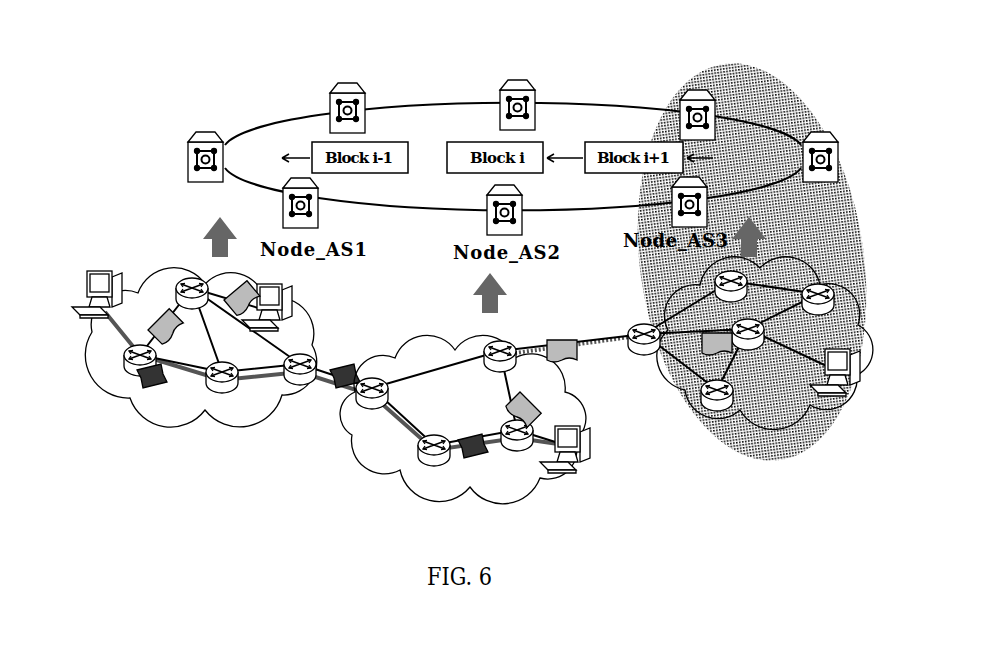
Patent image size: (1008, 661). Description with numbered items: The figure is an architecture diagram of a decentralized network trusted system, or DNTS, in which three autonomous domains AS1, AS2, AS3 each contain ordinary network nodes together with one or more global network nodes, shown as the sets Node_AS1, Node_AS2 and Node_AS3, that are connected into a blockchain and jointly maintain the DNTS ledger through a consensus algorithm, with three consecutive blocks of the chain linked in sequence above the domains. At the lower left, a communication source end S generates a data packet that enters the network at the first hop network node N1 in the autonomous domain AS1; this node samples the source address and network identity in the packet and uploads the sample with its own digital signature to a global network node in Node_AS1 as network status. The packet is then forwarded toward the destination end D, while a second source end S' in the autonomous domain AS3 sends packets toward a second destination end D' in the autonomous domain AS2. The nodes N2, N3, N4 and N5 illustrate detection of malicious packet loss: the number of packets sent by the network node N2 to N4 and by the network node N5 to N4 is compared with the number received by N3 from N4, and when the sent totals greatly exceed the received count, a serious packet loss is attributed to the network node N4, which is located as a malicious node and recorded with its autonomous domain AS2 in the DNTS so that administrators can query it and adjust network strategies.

The source end S is at (96, 304).
The destination end D is at (282, 307).
The second source end S' is at (841, 382).
The second destination end D' is at (565, 465).
The first hop network node N1 is at (124, 360).
The network node N2 is at (371, 409).
The network node N3 is at (644, 355).
The network node N4 is at (511, 345).
The network node N5 is at (517, 449).
The autonomous domain AS1 is at (200, 347).
The autonomous domain AS2 is at (463, 419).
The autonomous domain AS3 is at (765, 343).